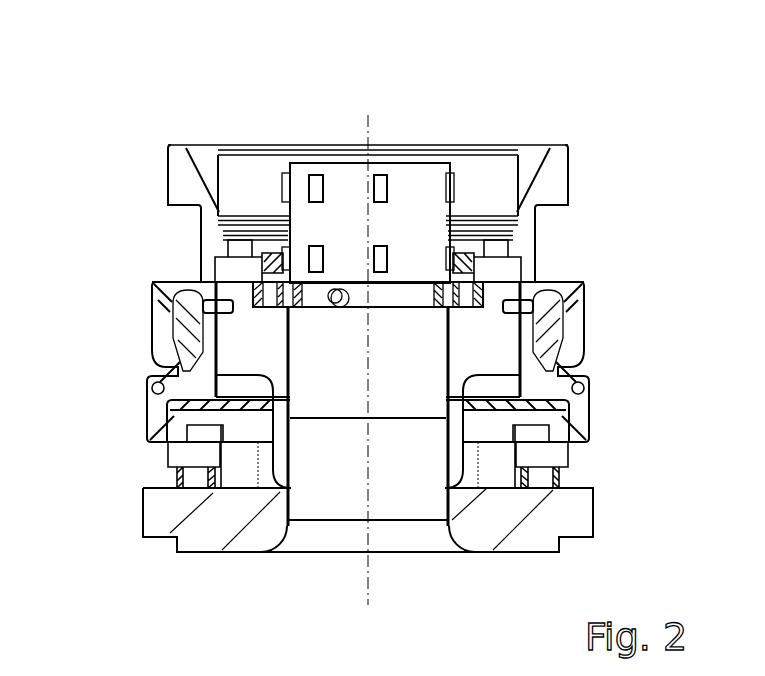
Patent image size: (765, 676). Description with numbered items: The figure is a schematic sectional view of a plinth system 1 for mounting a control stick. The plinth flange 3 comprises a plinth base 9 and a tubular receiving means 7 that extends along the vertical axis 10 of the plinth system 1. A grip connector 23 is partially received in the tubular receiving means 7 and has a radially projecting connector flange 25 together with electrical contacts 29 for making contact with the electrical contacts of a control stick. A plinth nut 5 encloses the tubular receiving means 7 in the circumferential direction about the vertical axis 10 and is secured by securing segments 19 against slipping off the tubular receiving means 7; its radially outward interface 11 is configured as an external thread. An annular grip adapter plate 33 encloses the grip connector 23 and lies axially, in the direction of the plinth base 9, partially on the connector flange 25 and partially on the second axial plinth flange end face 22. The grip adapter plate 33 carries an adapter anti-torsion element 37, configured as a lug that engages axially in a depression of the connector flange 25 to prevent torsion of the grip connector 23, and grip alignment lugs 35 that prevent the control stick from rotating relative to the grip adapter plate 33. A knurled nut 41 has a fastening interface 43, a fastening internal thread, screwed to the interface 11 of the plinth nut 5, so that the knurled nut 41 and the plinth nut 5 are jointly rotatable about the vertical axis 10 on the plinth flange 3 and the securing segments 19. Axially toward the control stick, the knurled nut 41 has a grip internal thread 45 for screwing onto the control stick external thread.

The plinth system 1 is at (70, 120).
The plinth flange 3 is at (143, 488).
The plinth nut 5 is at (147, 404).
The tubular receiving means 7 is at (468, 310).
The plinth base 9 is at (597, 519).
The vertical axis 10 is at (368, 585).
The interface 11 is at (575, 350).
The securing segments 19 is at (548, 300).
The second axial plinth flange end face 22 is at (517, 248).
The grip connector 23 is at (327, 160).
The connector flange 25 is at (432, 427).
The electrical contacts 29 is at (456, 173).
The grip adapter plate 33 is at (522, 290).
The grip alignment lugs 35 is at (492, 215).
The adapter anti-torsion element 37 is at (225, 280).
The knurled nut 41 is at (168, 192).
The fastening interface 43 is at (203, 305).
The grip internal thread 45 is at (240, 153).